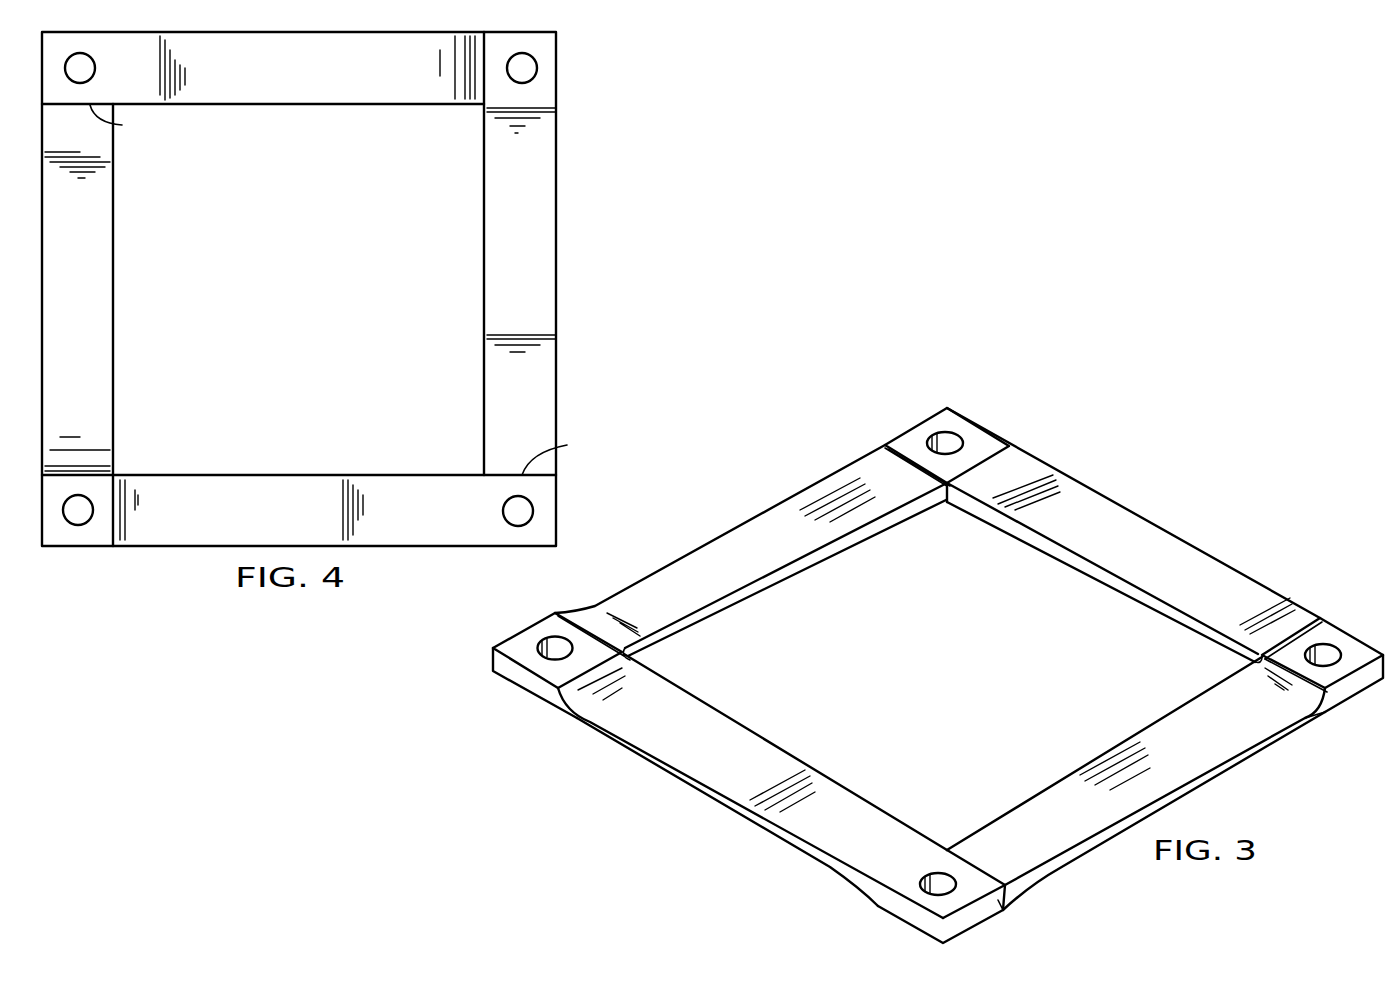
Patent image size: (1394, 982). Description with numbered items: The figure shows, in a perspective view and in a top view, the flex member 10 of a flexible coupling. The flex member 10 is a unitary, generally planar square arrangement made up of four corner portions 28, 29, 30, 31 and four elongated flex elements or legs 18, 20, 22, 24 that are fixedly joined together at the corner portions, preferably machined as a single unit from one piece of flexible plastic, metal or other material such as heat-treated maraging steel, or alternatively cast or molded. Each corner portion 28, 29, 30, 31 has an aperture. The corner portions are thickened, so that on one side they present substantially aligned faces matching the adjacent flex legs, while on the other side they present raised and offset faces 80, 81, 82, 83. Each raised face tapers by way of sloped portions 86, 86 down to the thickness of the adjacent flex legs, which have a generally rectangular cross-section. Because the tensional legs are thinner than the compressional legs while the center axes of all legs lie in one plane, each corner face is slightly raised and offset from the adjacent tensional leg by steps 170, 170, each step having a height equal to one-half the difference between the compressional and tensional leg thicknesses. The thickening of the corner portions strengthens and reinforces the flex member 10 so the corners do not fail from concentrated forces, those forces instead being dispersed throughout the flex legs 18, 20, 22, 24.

In FIG. 4, the flex member 10 is at (606, 157).
In FIG. 3, the flex member 10 is at (739, 483).
In FIG. 4, the flex leg 18 is at (278, 492).
In FIG. 3, the flex leg 18 is at (762, 770).
In FIG. 4, the flex leg 20 is at (90, 290).
In FIG. 3, the flex leg 20 is at (772, 560).
In FIG. 4, the flex leg 22 is at (313, 93).
In FIG. 3, the flex leg 22 is at (1104, 508).
In FIG. 4, the flex leg 24 is at (535, 245).
In FIG. 3, the flex leg 24 is at (1218, 752).
In FIG. 3, the corner portion 28 is at (530, 640).
In FIG. 3, the corner portion 29 is at (935, 425).
In FIG. 3, the corner portion 30 is at (1332, 636).
In FIG. 3, the corner portion 31 is at (880, 900).
In FIG. 3, the raised and offset face 80 is at (493, 649).
In FIG. 3, the raised and offset face 81 is at (930, 503).
In FIG. 3, the raised and offset face 82 is at (1350, 645).
In FIG. 3, the raised and offset face 83 is at (993, 920).
In FIG. 3, the sloped portion 86 is at (676, 650).
In FIG. 4, the step 170 is at (348, 290).
In FIG. 3, the step 170 is at (887, 450).